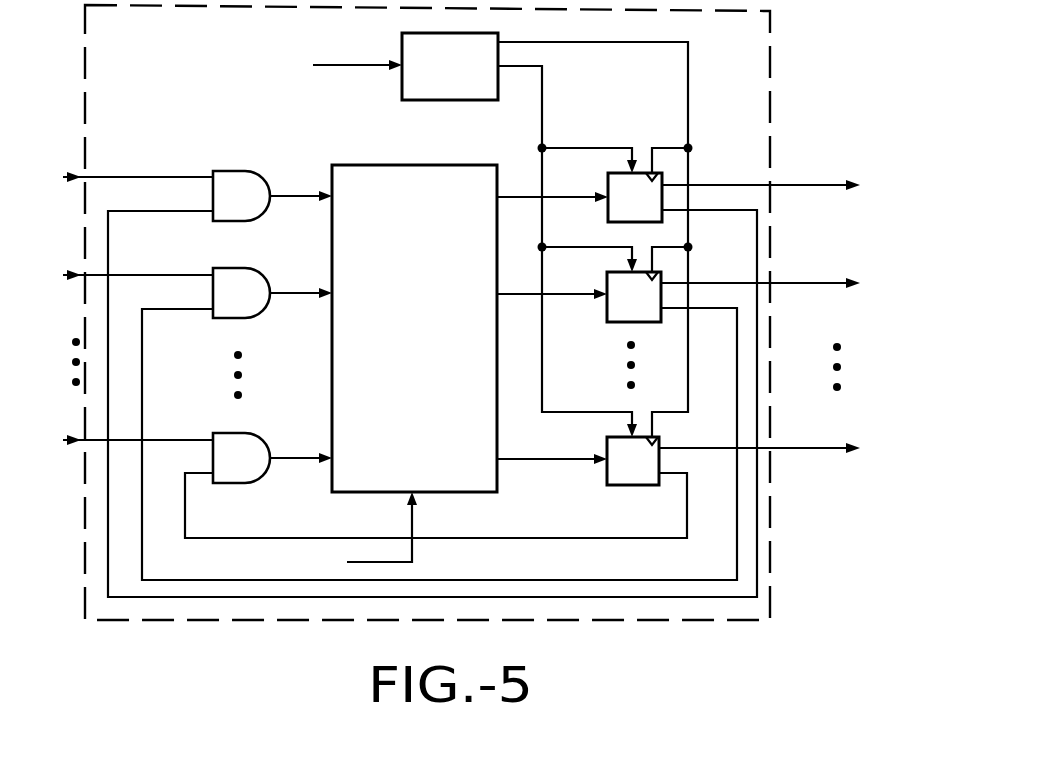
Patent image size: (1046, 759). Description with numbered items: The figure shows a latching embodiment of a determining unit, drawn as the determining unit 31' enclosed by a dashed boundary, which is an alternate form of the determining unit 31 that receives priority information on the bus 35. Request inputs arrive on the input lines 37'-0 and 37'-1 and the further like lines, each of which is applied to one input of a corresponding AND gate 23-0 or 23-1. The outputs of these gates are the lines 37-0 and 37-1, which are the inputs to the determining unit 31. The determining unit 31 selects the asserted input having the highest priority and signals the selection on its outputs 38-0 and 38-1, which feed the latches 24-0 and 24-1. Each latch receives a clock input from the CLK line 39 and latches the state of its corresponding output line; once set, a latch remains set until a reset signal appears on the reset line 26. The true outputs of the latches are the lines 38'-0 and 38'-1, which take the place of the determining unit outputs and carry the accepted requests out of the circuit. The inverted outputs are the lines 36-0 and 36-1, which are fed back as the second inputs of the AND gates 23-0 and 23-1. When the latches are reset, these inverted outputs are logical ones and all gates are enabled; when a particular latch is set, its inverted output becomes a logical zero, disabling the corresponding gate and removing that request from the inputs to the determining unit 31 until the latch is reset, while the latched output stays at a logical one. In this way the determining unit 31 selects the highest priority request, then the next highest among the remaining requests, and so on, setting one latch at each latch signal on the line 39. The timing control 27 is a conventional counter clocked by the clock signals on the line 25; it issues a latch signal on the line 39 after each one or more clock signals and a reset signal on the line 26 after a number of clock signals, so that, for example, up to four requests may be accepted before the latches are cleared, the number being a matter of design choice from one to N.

The determining unit 31' is at (464, 312).
The timing control 27 is at (400, 78).
The clock line 25 is at (332, 65).
The reset line 26 is at (525, 66).
The CLK line 39 is at (700, 66).
The determining unit 31 is at (414, 303).
The bus 35 is at (414, 521).
The AND gate 23-0 is at (232, 171).
The AND gate 23-1 is at (232, 268).
The input line 37'-0 is at (138, 153).
The input line 37'-1 is at (138, 261).
The line 37-0 is at (271, 192).
The line 37-1 is at (314, 263).
The output 38-0 is at (524, 195).
The output 38-1 is at (560, 294).
The latch 24-0 is at (615, 173).
The latch 24-1 is at (617, 272).
The line 38'-0 is at (765, 160).
The line 38'-1 is at (766, 265).
The line 36-0 is at (705, 203).
The line 36-1 is at (710, 300).